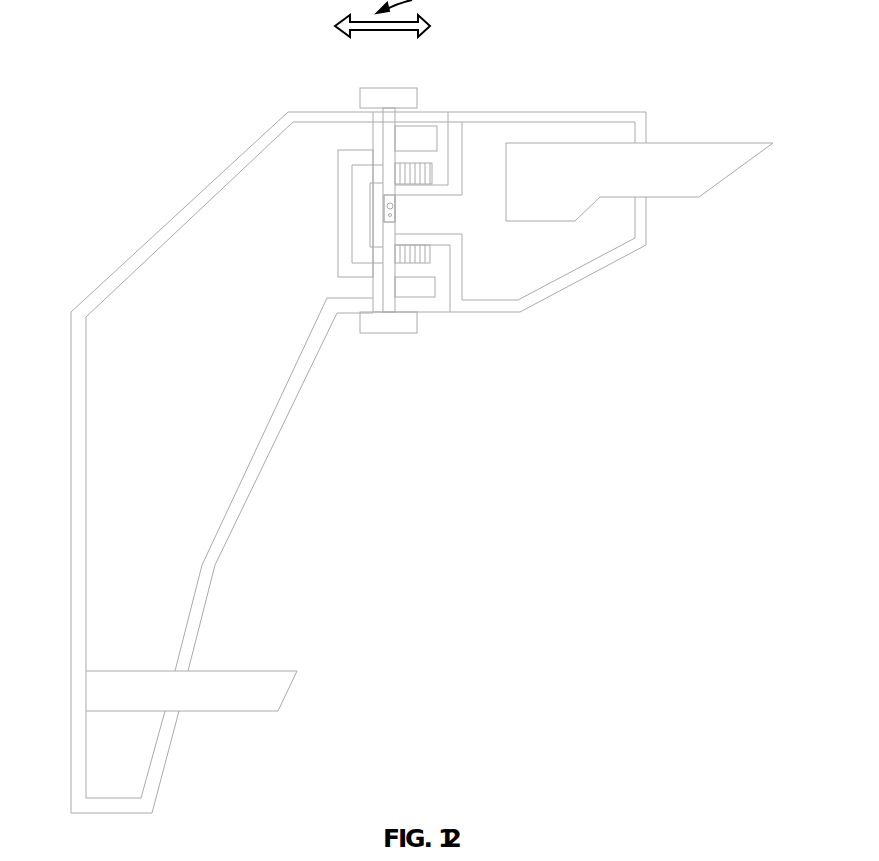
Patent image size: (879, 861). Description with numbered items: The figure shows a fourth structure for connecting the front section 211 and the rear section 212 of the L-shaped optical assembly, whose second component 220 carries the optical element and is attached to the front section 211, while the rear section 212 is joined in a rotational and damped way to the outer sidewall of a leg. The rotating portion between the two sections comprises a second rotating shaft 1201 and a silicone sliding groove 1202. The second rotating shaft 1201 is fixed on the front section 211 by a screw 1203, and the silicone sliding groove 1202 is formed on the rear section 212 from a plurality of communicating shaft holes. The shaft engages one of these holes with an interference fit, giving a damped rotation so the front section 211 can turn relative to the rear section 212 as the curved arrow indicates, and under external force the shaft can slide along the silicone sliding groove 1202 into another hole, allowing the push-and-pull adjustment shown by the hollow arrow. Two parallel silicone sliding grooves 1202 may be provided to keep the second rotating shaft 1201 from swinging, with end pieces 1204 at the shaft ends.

The front section 211 is at (593, 132).
The rear section 212 is at (230, 279).
The second component 220 is at (657, 180).
The second rotating shaft 1201 is at (389, 137).
The silicone sliding groove 1202 is at (408, 255).
The screw 1203 is at (393, 210).
The end cap 1204 is at (385, 97).